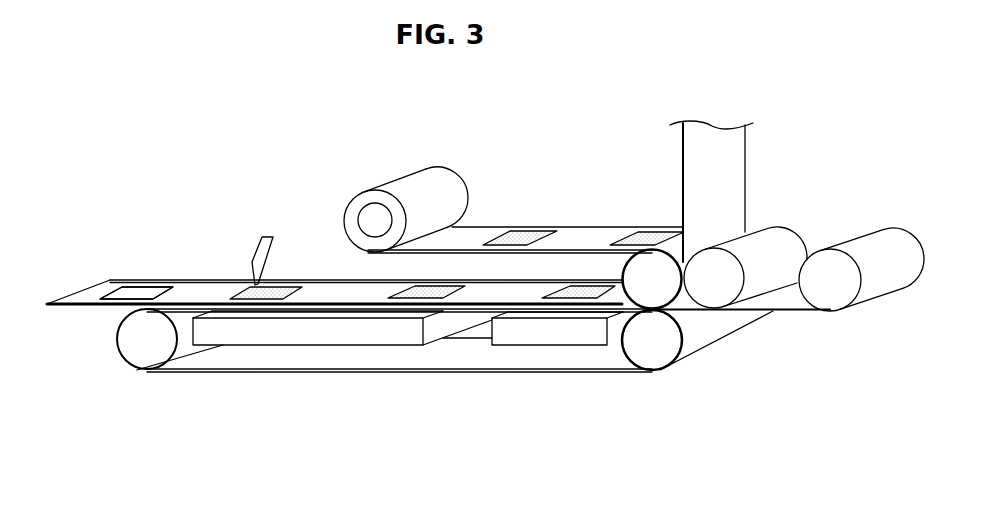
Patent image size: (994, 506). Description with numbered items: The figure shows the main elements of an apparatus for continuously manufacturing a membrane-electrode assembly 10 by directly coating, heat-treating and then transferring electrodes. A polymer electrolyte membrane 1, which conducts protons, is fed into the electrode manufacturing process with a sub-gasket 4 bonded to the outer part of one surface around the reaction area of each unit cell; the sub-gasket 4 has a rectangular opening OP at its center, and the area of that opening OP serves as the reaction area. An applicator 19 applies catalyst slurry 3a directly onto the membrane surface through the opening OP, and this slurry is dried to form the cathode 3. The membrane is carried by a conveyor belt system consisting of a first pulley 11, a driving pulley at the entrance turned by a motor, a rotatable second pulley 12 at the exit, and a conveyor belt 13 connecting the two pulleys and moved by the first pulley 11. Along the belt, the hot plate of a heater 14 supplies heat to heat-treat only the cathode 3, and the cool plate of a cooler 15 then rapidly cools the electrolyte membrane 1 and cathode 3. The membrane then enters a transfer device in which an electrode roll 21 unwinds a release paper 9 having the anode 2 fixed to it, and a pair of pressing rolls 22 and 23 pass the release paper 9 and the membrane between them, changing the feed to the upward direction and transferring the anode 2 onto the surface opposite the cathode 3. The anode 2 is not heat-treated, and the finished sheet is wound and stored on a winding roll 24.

The electrolyte membrane 1 is at (140, 295).
The opening OP is at (118, 292).
The anode 2 is at (635, 238).
The cathode 3 is at (578, 293).
The catalyst slurry 3a is at (278, 297).
The sub-gasket 4 is at (88, 295).
The release paper 9 is at (732, 188).
The membrane-electrode assembly 10 is at (472, 235).
The first pulley 11 is at (146, 355).
The second pulley 12 is at (648, 353).
The conveyor belt 13 is at (385, 372).
The heater 14 is at (278, 345).
The cooler 15 is at (560, 346).
The applicator 19 is at (258, 243).
The electrode roll 21 is at (833, 298).
The pressing roll 22 is at (708, 300).
The pressing roll 23 is at (655, 263).
The winding roll 24 is at (373, 215).